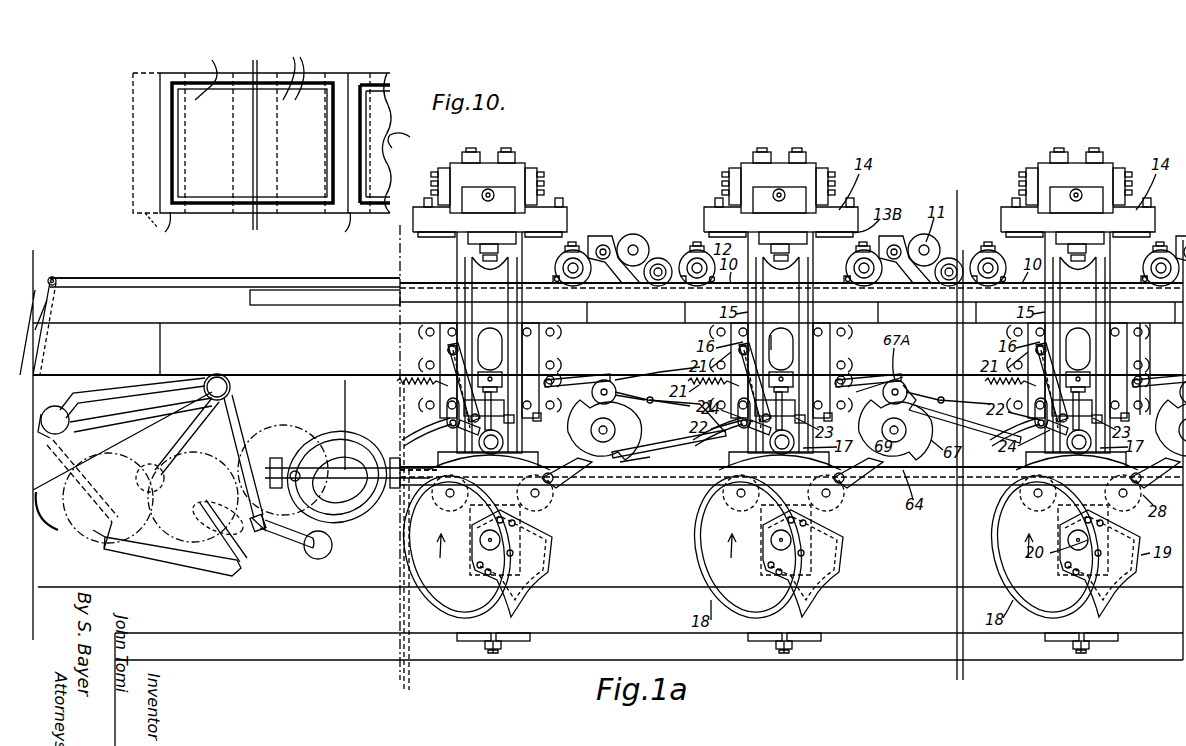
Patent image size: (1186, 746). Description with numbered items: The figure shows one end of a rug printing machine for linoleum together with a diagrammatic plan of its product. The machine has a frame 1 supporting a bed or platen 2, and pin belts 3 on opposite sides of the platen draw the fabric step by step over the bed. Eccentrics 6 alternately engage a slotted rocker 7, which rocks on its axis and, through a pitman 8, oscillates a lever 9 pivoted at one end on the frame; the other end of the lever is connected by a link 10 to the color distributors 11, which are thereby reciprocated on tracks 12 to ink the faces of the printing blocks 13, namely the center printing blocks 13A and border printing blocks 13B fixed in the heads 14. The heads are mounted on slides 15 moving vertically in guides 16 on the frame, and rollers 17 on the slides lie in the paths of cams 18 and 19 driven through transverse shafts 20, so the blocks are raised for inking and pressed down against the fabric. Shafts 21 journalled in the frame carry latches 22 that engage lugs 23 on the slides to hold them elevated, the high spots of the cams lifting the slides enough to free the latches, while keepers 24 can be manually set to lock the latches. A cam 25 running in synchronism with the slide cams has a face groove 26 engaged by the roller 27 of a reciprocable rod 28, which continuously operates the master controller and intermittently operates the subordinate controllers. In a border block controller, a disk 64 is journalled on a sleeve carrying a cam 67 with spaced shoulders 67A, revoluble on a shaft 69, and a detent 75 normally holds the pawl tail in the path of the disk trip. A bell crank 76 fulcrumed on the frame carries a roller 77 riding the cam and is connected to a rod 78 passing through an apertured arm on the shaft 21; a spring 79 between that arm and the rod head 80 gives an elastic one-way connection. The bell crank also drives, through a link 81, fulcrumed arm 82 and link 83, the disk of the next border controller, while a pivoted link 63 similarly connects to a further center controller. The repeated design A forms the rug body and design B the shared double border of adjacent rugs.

In FIG. 1A, the frame 1 is at (163, 330).
In FIG. 1A, the bed or platen 2 is at (400, 305).
In FIG. 1A, the pin belts 3 is at (1168, 290).
In FIG. 1A, the eccentrics 6 is at (312, 550).
In FIG. 1A, the slotted rocker 7 is at (234, 572).
In FIG. 1A, the pitman 8 is at (157, 418).
In FIG. 1A, the lever 9 is at (56, 298).
In FIG. 1A, the link 10 is at (1025, 283).
In FIG. 1A, the color distributors 11 is at (635, 242).
In FIG. 1A, the tracks 12 is at (370, 290).
In FIG. 1A, the bracket plate 13 is at (717, 211).
In FIG. 1A, the center printing blocks 13A is at (1014, 210).
In FIG. 1A, the border printing blocks 13B is at (560, 232).
In FIG. 1A, the heads 14 is at (548, 210).
In FIG. 1A, the slides 15 is at (457, 312).
In FIG. 1A, the lever 16 is at (452, 342).
In FIG. 1A, the rollers 17 is at (512, 448).
In FIG. 1A, the cams 18 is at (468, 600).
In FIG. 1A, the cams 19 is at (553, 560).
In FIG. 1A, the transverse shafts 20 is at (500, 540).
In FIG. 1A, the shafts 21 is at (440, 352).
In FIG. 1A, the latches 22 is at (452, 430).
In FIG. 1A, the lugs 23 is at (505, 418).
In FIG. 1A, the keepers 24 is at (462, 422).
In FIG. 1A, the cam 25 is at (368, 522).
In FIG. 1A, the face groove 26 is at (372, 500).
In FIG. 1A, the roller 27 is at (440, 468).
In FIG. 1A, the reciprocable rod 28 is at (472, 455).
In FIG. 1A, the pivoted link 63 is at (965, 436).
In FIG. 1A, the disk 64 is at (560, 480).
In FIG. 1A, the cam 67 is at (640, 430).
In FIG. 1A, the spaced shoulders 67A is at (604, 380).
In FIG. 1A, the shaft 69 is at (603, 433).
In FIG. 1A, the detent 75 is at (657, 373).
In FIG. 1A, the bell crank 76 is at (874, 367).
In FIG. 1A, the roller 77 is at (905, 381).
In FIG. 1A, the rod 78 is at (781, 327).
In FIG. 1A, the spring 79 is at (670, 406).
In FIG. 1A, the head 80 is at (639, 400).
In FIG. 1A, the link 81 is at (715, 434).
In FIG. 1A, the fulcrumed arm 82 is at (690, 446).
In FIG. 1A, the link 83 is at (652, 462).
In FIG. 10, the design A is at (305, 97).
In FIG. 10, the design B is at (247, 231).